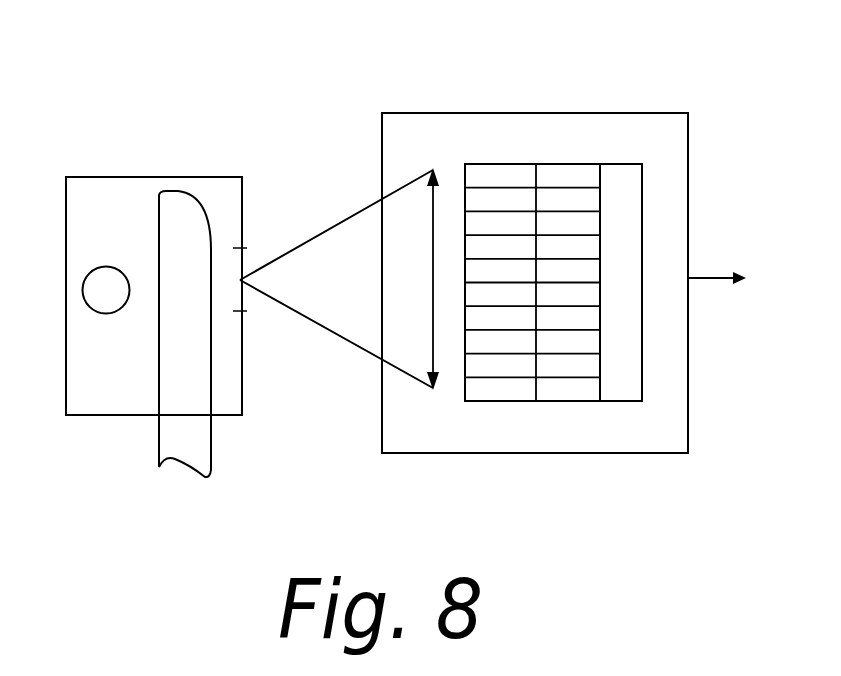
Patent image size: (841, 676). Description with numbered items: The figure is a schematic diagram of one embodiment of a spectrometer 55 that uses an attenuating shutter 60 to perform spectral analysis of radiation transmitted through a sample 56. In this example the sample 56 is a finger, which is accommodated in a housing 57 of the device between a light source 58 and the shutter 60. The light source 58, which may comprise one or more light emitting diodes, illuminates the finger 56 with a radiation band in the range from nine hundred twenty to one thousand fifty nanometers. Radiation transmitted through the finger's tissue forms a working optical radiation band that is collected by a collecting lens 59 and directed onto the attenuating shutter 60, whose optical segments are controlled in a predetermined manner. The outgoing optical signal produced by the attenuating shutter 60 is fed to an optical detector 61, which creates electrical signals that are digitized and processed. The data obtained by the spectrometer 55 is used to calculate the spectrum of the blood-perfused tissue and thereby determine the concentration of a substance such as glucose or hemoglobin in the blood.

The spectrometer 55 is at (689, 185).
The sample 56 is at (195, 230).
The housing 57 is at (190, 177).
The light source 58 is at (121, 266).
The collecting lens 59 is at (434, 278).
The attenuating shutter 60 is at (536, 200).
The optical detector 61 is at (622, 188).